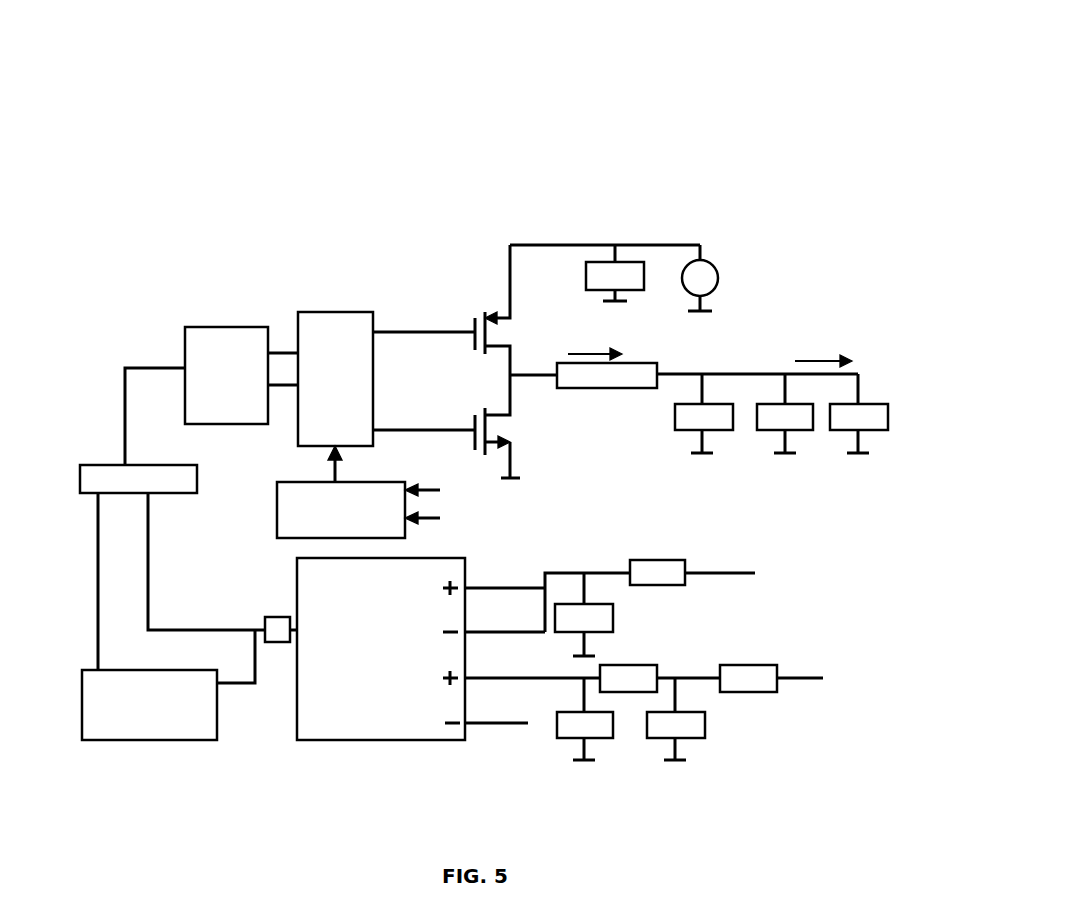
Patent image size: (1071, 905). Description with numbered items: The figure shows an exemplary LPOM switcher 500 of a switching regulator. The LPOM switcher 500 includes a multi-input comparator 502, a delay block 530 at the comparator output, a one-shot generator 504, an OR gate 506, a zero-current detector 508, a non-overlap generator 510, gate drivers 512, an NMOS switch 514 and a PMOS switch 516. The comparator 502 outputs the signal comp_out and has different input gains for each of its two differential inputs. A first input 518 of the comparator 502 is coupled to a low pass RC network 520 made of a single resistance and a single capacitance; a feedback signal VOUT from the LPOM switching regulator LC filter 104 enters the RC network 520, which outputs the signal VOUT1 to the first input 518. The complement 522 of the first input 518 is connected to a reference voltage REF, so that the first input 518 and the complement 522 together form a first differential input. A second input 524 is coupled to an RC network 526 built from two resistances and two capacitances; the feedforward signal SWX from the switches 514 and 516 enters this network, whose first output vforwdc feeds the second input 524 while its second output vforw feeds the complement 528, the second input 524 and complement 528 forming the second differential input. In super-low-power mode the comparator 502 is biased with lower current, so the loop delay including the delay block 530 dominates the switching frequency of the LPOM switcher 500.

The LPOM switcher 500 is at (660, 108).
The LC filter 104 is at (890, 455).
The multi-input comparator 502 is at (377, 688).
The one-shot generator 504 is at (118, 740).
The OR gate 506 is at (80, 478).
The zero-current detector 508 is at (405, 530).
The non-overlap generator 510 is at (200, 326).
The gate drivers 512 is at (318, 312).
The NMOS switch 514 is at (485, 407).
The PMOS switch 516 is at (487, 357).
The first input 518 is at (445, 632).
The low pass RC network 520 is at (770, 553).
The complement of first input 522 is at (445, 585).
The second input 524 is at (445, 678).
The RC network 526 is at (840, 665).
The complement of second input 528 is at (445, 723).
The delay block 530 is at (275, 642).